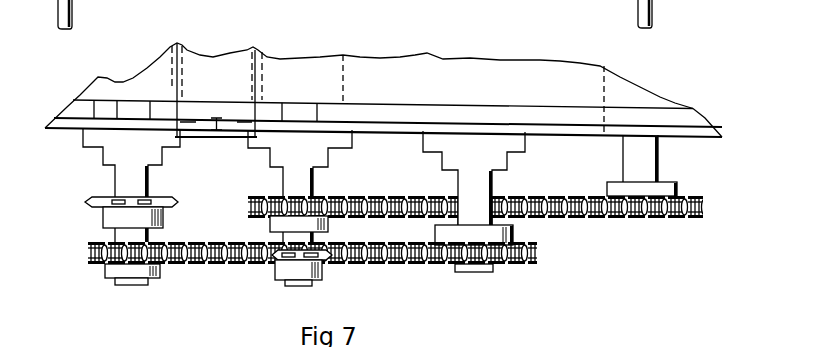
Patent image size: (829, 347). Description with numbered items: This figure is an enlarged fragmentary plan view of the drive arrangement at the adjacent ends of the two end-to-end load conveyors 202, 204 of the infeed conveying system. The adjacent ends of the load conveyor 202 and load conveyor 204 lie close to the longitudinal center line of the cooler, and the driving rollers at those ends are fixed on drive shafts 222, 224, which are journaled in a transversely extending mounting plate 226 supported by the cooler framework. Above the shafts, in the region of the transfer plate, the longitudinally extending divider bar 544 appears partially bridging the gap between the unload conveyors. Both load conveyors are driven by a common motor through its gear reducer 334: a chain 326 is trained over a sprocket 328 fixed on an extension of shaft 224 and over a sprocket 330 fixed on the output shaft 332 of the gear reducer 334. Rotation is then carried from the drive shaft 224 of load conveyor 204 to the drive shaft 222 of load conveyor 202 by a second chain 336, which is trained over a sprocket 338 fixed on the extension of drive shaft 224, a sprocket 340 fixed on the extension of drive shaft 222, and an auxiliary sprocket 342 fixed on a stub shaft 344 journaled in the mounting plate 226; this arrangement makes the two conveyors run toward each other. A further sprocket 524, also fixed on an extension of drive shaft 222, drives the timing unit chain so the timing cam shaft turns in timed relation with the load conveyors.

The load conveyor 202 is at (112, 73).
The load conveyor 204 is at (560, 60).
The mounting plate 226 is at (713, 137).
The gear reducer 334 is at (625, 100).
The divider bar 544 is at (238, 57).
The shaft 222 is at (148, 181).
The sprocket 524 is at (87, 201).
The shaft 224 is at (314, 181).
The stub shaft 344 is at (492, 189).
The output shaft 332 is at (658, 166).
The sprocket 330 is at (677, 190).
The chain 326 is at (598, 171).
The sprocket 328 is at (270, 221).
The auxiliary sprocket 342 is at (513, 238).
The chain 336 is at (422, 267).
The sprocket 338 is at (277, 276).
The sprocket 340 is at (110, 276).